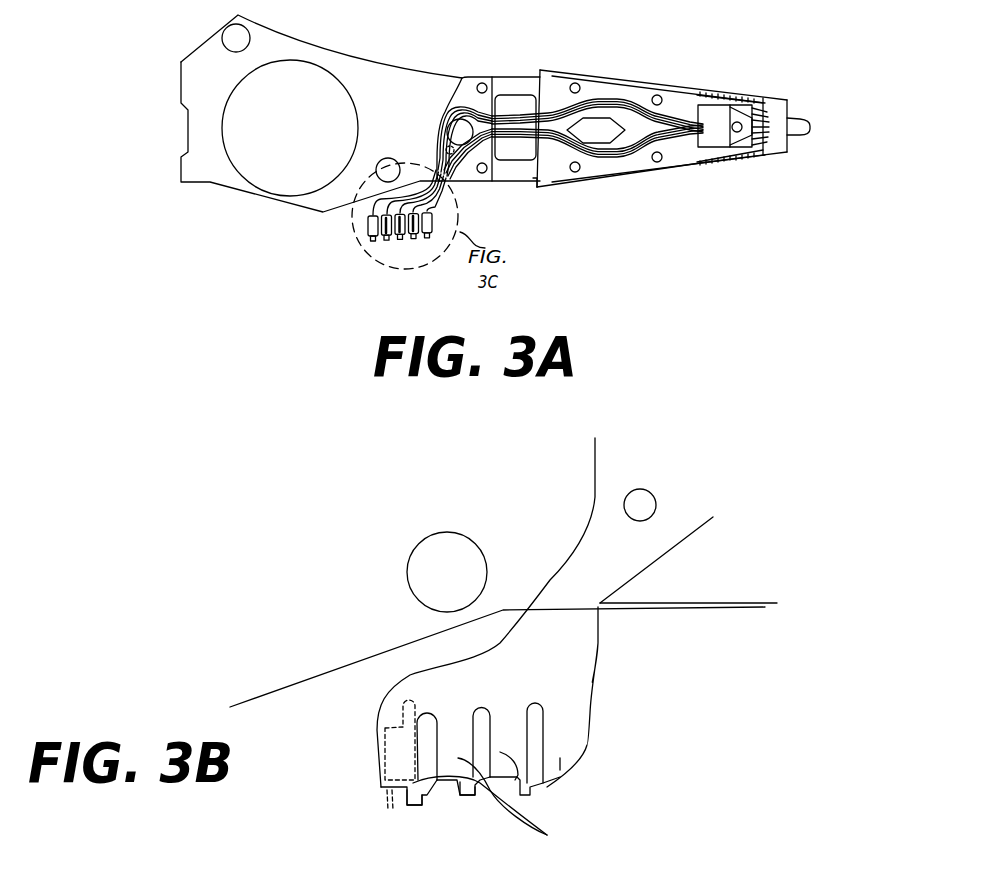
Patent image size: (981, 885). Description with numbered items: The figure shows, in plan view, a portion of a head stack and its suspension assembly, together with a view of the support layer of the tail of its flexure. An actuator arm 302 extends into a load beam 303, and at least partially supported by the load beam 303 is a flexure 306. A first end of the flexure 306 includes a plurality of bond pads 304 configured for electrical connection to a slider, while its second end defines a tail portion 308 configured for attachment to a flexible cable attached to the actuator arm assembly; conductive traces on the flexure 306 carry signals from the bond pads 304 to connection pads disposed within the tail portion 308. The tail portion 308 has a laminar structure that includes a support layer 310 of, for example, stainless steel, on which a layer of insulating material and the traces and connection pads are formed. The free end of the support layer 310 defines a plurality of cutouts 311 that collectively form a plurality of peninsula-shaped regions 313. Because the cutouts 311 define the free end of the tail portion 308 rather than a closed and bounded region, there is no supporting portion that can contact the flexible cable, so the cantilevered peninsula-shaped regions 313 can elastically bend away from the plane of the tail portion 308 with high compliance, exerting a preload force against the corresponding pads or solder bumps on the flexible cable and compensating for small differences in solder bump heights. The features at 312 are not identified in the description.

In FIG. 3A, the actuator arm 302 is at (388, 72).
In FIG. 3A, the load beam 303 is at (673, 95).
In FIG. 3A, the bond pads 304 is at (760, 133).
In FIG. 3A, the flexure 306 is at (612, 155).
In FIG. 3A, the tail portion 308 is at (362, 230).
In FIG. 3B, the support layer 310 is at (588, 647).
In FIG. 3B, the cutouts 311 is at (537, 743).
In FIG. 3B, the feet 312 is at (413, 805).
In FIG. 3B, the peninsula-shaped regions 313 is at (502, 803).